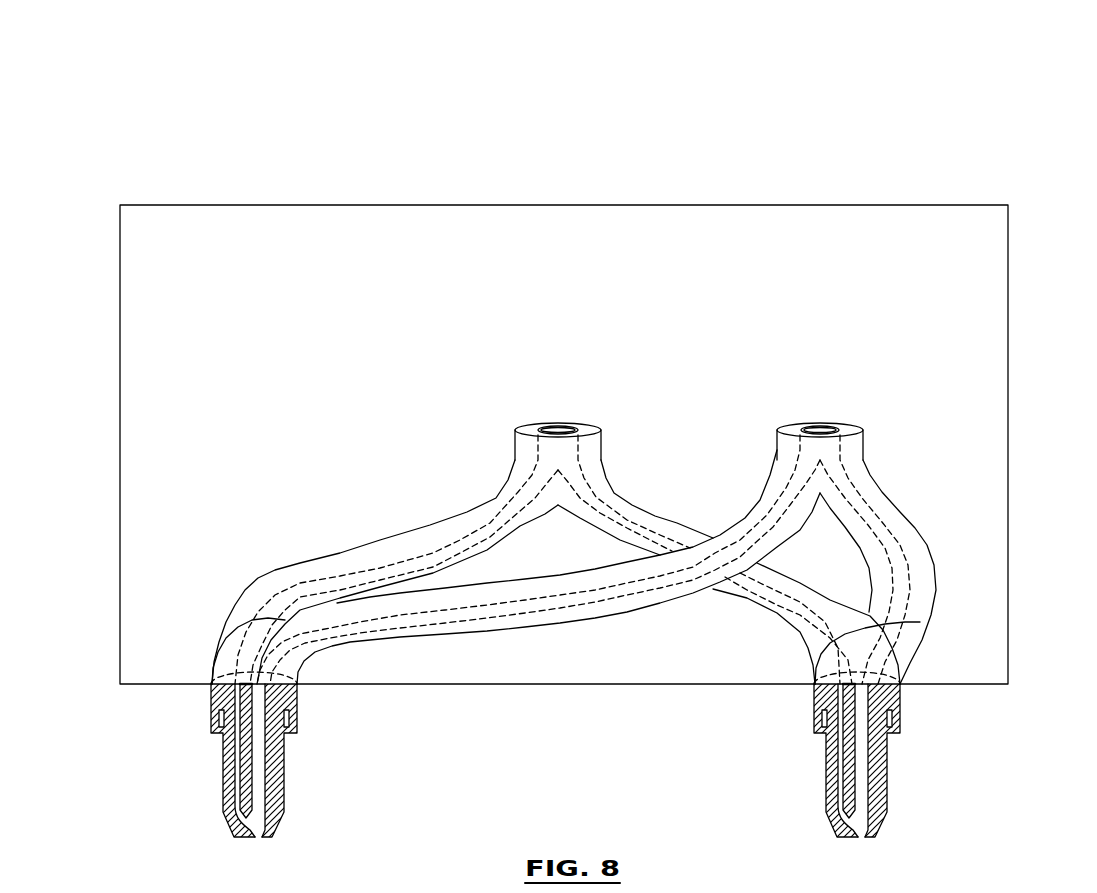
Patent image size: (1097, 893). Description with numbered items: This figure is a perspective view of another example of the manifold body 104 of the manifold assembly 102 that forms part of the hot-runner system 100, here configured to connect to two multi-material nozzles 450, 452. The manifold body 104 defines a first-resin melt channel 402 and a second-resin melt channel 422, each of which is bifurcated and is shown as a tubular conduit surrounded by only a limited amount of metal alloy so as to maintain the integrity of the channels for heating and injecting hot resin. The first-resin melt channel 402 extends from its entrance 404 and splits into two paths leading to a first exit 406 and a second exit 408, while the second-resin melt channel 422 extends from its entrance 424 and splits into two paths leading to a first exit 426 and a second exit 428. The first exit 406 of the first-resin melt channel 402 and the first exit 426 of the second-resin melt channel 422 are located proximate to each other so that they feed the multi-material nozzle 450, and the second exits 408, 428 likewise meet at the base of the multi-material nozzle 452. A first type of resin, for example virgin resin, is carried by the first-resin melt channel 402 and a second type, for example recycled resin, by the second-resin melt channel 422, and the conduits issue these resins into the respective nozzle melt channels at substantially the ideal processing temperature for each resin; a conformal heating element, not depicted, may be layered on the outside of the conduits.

The hot-runner system 100 is at (768, 65).
The manifold assembly 102 is at (641, 122).
The manifold body 104 is at (563, 205).
The first-resin melt channel 402 is at (382, 540).
The entrance 404 is at (560, 428).
The first exit 406 is at (213, 657).
The second exit 408 is at (920, 622).
The second-resin melt channel 422 is at (492, 585).
The entrance 424 is at (822, 428).
The first exit 426 is at (213, 620).
The second exit 428 is at (905, 660).
The multi-material nozzle 450 is at (284, 790).
The multi-material nozzle 452 is at (890, 778).